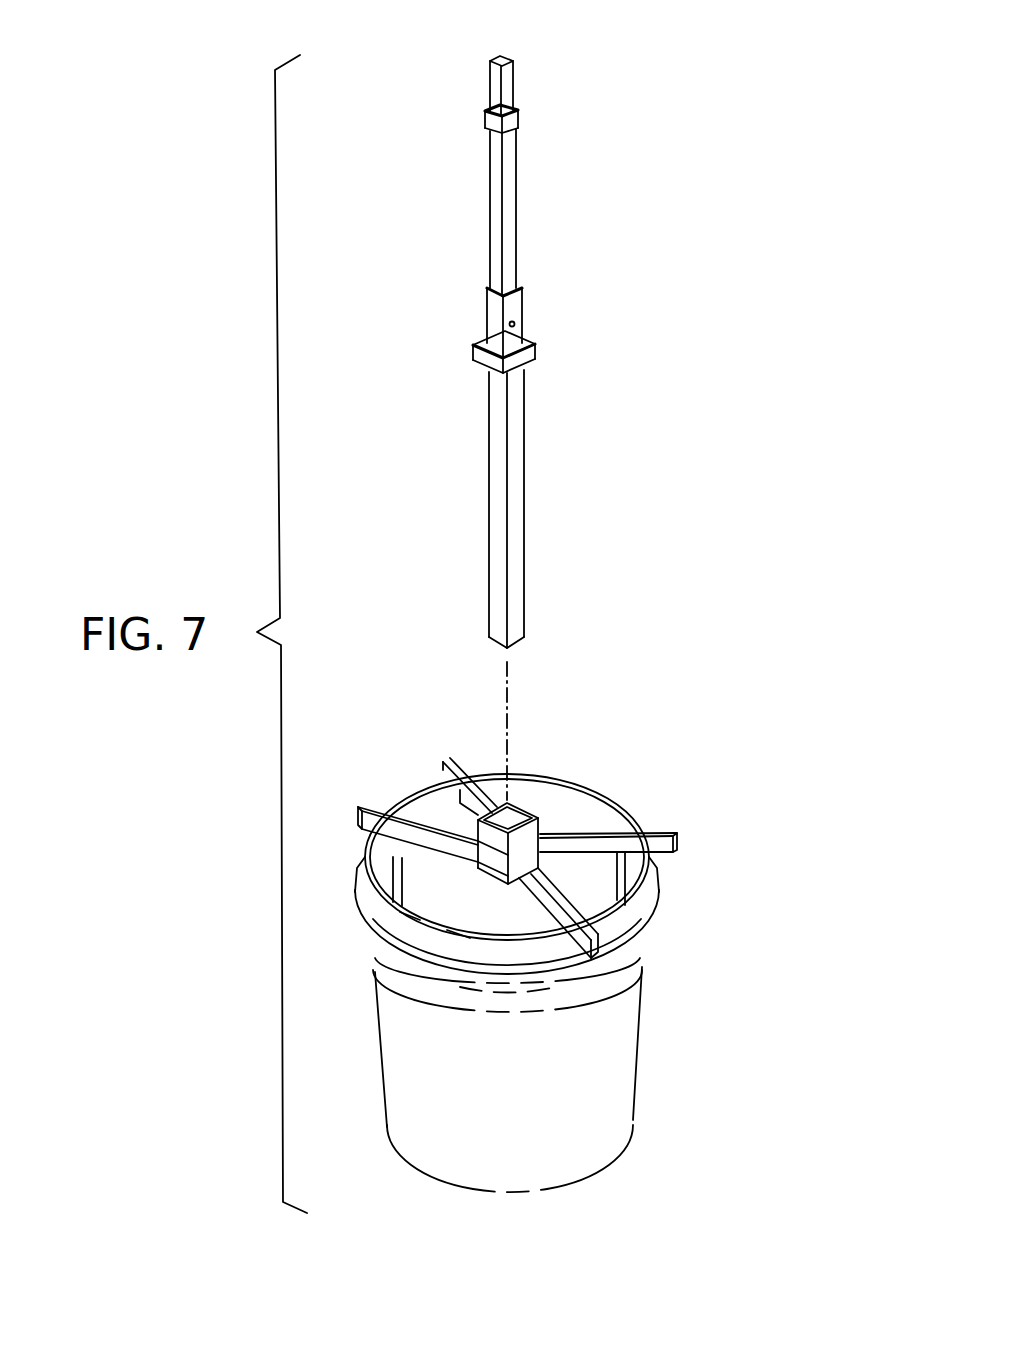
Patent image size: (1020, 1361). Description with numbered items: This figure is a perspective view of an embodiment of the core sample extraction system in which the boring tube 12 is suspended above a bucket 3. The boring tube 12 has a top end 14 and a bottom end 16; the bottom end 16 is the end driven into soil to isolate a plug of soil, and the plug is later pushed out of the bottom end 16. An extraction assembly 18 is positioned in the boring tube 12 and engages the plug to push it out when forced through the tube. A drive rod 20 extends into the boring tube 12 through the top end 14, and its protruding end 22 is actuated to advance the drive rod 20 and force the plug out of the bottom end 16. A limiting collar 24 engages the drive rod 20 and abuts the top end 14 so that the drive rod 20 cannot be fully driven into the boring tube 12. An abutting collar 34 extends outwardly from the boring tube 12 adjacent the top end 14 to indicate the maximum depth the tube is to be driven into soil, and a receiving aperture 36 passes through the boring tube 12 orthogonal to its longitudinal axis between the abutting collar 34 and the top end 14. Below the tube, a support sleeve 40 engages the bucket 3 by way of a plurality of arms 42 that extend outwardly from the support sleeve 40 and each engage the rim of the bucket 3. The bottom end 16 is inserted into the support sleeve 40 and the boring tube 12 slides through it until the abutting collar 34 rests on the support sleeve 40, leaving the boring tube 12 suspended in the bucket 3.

The bucket 3 is at (637, 1087).
The boring tube 12 is at (526, 471).
The top end 14 is at (522, 274).
The bottom end 16 is at (519, 645).
The extraction assembly 18 is at (515, 140).
The drive rod 20 is at (520, 231).
The protruding end 22 is at (497, 57).
The limiting collar 24 is at (520, 119).
The abutting collar 34 is at (536, 352).
The receiving aperture 36 is at (516, 325).
The support sleeve 40 is at (532, 813).
The arms 42 is at (383, 828).